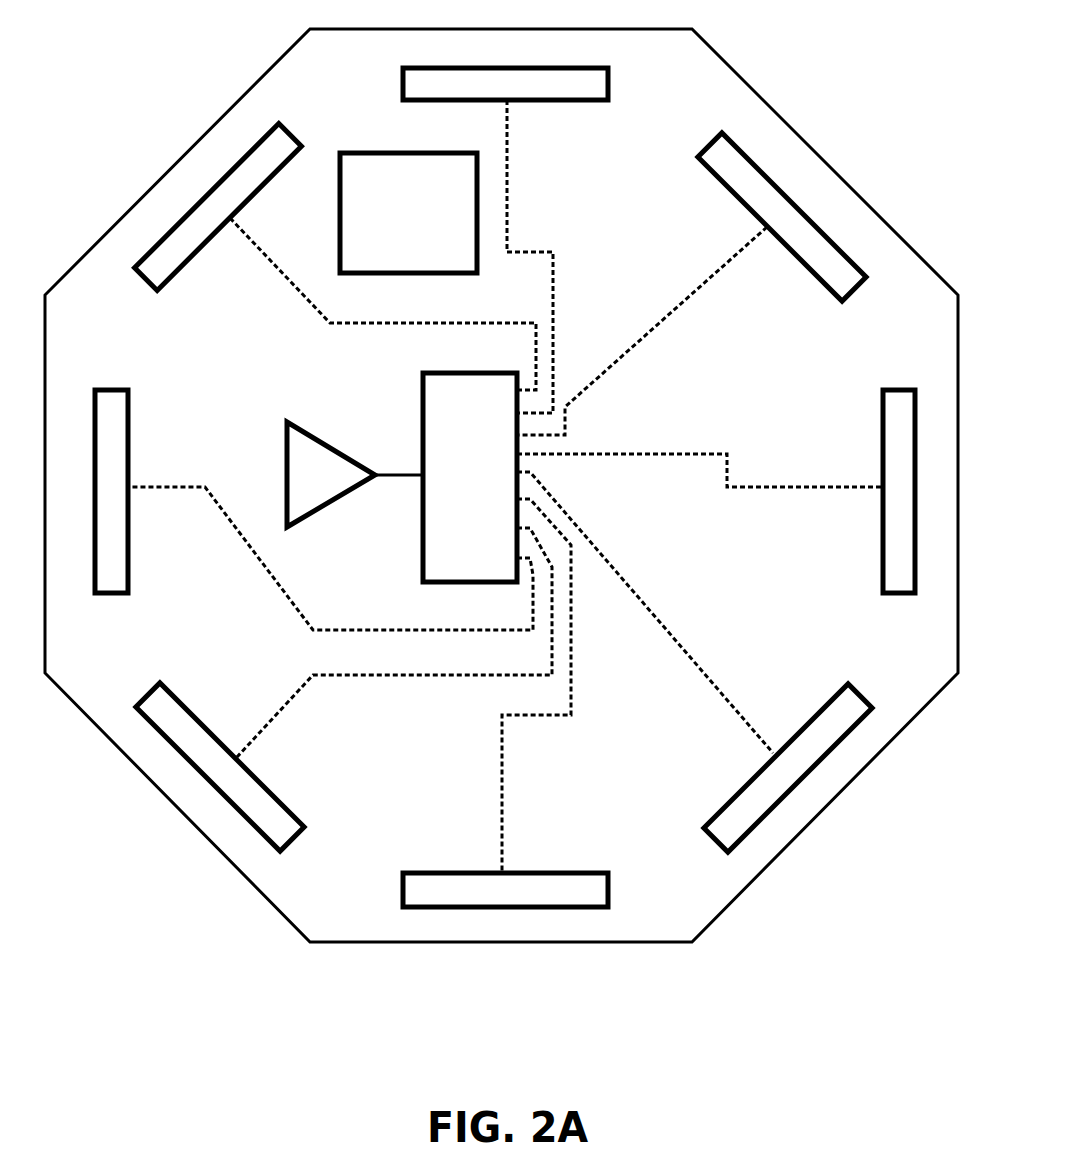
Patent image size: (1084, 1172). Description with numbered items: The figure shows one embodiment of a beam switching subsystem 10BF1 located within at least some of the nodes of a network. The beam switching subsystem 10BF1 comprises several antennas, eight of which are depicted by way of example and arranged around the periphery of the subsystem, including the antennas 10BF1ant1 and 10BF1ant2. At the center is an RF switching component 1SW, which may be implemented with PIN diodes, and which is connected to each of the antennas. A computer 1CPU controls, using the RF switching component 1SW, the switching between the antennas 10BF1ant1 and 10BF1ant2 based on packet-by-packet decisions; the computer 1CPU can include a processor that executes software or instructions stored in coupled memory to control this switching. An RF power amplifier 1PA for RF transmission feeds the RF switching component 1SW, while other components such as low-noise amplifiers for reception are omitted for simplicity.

The beam switching subsystem 10BF1 is at (313, 942).
The antenna 10BF1ant1 is at (883, 570).
The antenna 10BF1ant2 is at (705, 828).
The computer 1CPU is at (443, 232).
The RF switching component 1SW is at (503, 493).
The RF power amplifier 1PA is at (343, 487).